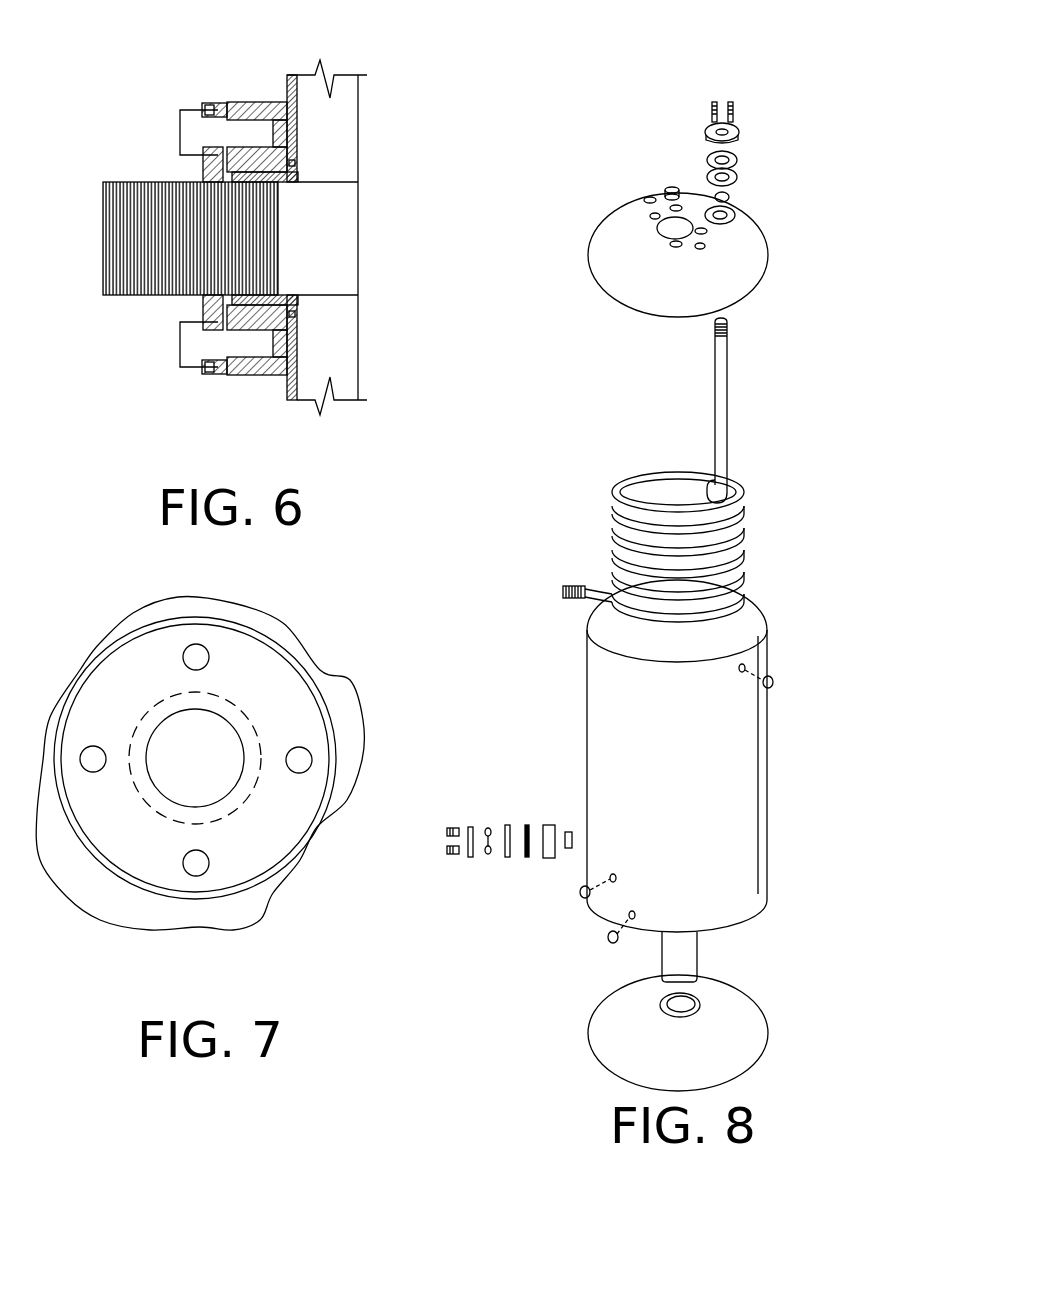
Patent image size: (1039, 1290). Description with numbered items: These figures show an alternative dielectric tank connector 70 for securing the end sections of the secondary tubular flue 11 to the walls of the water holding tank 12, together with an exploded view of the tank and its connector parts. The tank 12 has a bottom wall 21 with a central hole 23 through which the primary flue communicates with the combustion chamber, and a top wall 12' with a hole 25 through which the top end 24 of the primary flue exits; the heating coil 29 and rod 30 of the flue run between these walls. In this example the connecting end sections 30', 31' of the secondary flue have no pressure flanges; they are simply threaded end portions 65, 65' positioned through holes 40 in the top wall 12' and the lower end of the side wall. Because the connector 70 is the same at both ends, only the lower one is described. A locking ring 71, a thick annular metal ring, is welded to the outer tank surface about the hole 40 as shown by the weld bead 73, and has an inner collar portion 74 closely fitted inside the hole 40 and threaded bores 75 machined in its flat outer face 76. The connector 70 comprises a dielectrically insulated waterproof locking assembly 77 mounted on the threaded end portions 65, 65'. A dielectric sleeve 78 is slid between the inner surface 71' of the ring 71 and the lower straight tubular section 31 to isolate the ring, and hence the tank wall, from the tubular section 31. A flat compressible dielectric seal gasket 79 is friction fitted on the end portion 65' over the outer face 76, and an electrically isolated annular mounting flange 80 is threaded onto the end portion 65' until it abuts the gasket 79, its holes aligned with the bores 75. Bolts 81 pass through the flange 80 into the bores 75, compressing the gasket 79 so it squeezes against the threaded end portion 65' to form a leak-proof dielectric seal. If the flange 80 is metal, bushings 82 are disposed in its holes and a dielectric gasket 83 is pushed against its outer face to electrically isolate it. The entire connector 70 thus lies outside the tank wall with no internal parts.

In FIG. 8, the secondary tubular flue 11 is at (755, 480).
In FIG. 8, the water holding tank 12 is at (693, 761).
In FIG. 8, the top wall 12' is at (672, 261).
In FIG. 8, the bottom wall 21 is at (730, 1015).
In FIG. 8, the central hole 23 is at (665, 1007).
In FIG. 8, the top end 24 is at (692, 952).
In FIG. 8, the hole 25 is at (660, 228).
In FIG. 8, the heating coil 29 is at (676, 494).
In FIG. 8, the shaft 30 is at (757, 410).
In FIG. 8, the connecting end section 30' is at (766, 333).
In FIG. 8, the lower straight tubular section 31 is at (571, 645).
In FIG. 8, the connecting end section 31' is at (572, 556).
In FIG. 6, the hole 40 is at (300, 165).
In FIG. 8, the threaded end portion 65 is at (773, 296).
In FIG. 6, the threaded end portion 65' is at (165, 238).
In FIG. 8, the threaded end portion 65' is at (556, 607).
In FIG. 6, the dielectric tank connector 70 is at (268, 388).
In FIG. 8, the dielectric tank connector 70 is at (755, 170).
In FIG. 6, the locking ring 71 is at (242, 417).
In FIG. 7, the locking ring 71 is at (169, 686).
In FIG. 8, the locking ring 71 is at (538, 883).
In FIG. 6, the inner surface 71' is at (282, 200).
In FIG. 6, the weld bead 73 is at (283, 96).
In FIG. 7, the weld bead 73 is at (232, 627).
In FIG. 6, the inner collar portion 74 is at (232, 318).
In FIG. 7, the inner collar portion 74 is at (255, 735).
In FIG. 7, the threaded bores 75 is at (310, 762).
In FIG. 6, the flat outer face 76 is at (240, 311).
In FIG. 7, the flat outer face 76 is at (292, 680).
In FIG. 8, the flat outer face 76 is at (545, 823).
In FIG. 6, the dielectrically insulated waterproof locking assembly 77 is at (128, 133).
In FIG. 6, the dielectric sleeve 78 is at (296, 298).
In FIG. 8, the dielectric sleeve 78 is at (568, 850).
In FIG. 6, the seal gasket 79 is at (235, 370).
In FIG. 8, the seal gasket 79 is at (527, 828).
In FIG. 6, the mounting flange 80 is at (203, 172).
In FIG. 8, the mounting flange 80 is at (506, 864).
In FIG. 6, the bolts 81 is at (200, 127).
In FIG. 8, the bolts 81 is at (712, 120).
In FIG. 6, the bushings 82 is at (216, 130).
In FIG. 8, the bushings 82 is at (491, 835).
In FIG. 8, the dielectric gasket 83 is at (470, 860).